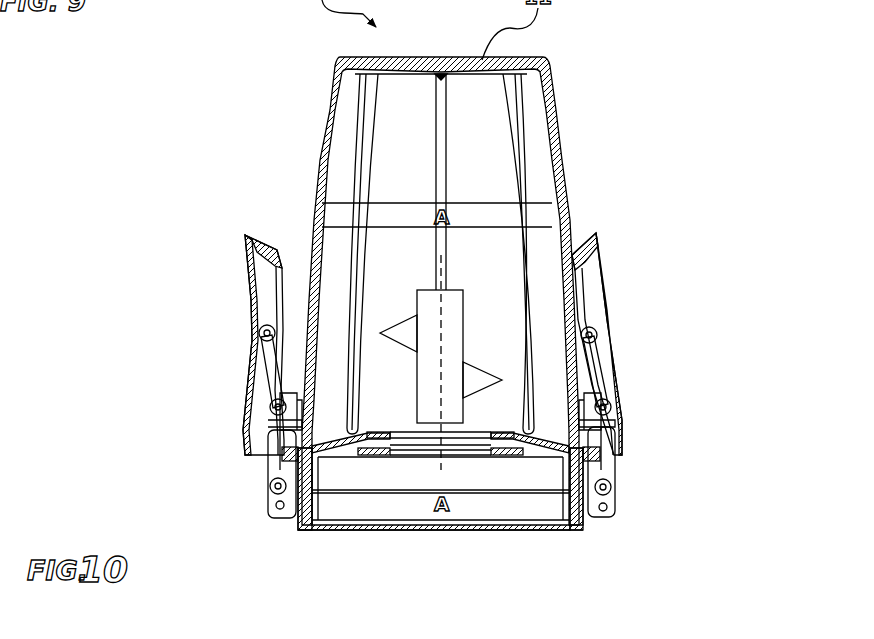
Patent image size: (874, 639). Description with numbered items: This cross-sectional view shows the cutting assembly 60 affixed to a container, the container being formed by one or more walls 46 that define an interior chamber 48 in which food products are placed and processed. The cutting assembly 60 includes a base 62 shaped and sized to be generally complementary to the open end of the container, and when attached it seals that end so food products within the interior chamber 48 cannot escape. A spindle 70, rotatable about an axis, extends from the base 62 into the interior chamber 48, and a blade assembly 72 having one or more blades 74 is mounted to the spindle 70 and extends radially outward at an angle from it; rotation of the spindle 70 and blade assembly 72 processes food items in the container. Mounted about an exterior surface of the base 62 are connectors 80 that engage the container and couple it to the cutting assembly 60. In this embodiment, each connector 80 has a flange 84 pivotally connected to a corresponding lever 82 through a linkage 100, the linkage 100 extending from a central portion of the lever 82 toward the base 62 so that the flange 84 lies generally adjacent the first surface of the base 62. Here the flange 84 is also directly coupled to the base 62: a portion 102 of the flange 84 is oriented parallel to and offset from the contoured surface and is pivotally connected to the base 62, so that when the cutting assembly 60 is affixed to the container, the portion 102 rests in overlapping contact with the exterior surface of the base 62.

The walls 46 is at (328, 126).
The interior chamber 48 is at (490, 142).
The spindle 70 is at (443, 298).
The blade assembly 72 is at (383, 311).
The blades 74 is at (403, 332).
The cutting assembly 60 is at (251, 507).
The base 62 is at (550, 527).
The lever 82 is at (252, 308).
The linkage 100 is at (275, 373).
The connectors 80 is at (221, 419).
The flange 84 is at (278, 425).
The portion 102 is at (262, 458).